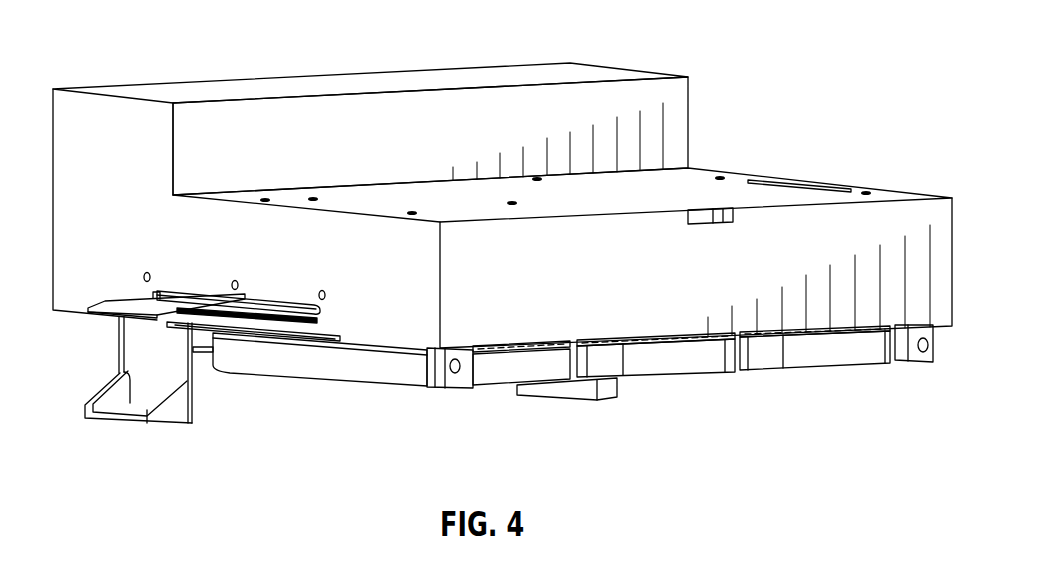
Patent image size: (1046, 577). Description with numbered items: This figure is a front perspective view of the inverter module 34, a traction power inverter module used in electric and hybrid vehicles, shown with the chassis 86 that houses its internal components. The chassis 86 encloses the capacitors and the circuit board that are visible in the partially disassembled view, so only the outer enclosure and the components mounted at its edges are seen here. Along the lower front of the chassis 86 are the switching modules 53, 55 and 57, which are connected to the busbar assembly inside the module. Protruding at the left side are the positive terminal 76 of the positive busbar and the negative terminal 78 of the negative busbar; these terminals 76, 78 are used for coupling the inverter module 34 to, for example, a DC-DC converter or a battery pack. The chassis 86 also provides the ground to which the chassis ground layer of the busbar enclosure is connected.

The inverter module 34 is at (140, 44).
The chassis 86 is at (692, 185).
The negative terminal 78 is at (97, 318).
The positive terminal 76 is at (245, 322).
The switching module 53 is at (483, 388).
The switching module 55 is at (677, 363).
The switching module 57 is at (833, 357).